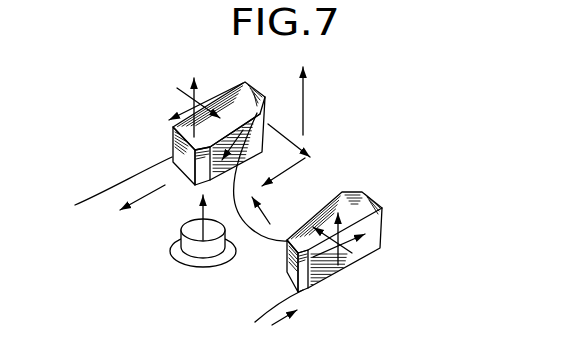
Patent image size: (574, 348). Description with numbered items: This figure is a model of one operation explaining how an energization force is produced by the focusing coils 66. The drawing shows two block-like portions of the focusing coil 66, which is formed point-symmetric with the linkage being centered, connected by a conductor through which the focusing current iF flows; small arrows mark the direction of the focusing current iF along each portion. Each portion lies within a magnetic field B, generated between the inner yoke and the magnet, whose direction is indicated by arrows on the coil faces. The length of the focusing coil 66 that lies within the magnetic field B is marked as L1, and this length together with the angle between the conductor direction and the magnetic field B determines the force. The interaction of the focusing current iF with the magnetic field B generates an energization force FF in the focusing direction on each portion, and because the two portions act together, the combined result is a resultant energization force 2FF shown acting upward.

The focusing coil 66 is at (172, 137).
The energization force FF is at (194, 80).
The resultant energization force 2FF is at (303, 100).
The focusing current iF is at (397, 234).
The magnetic field B is at (365, 283).
The length of the focusing coil within the magnetic field L1 is at (286, 161).